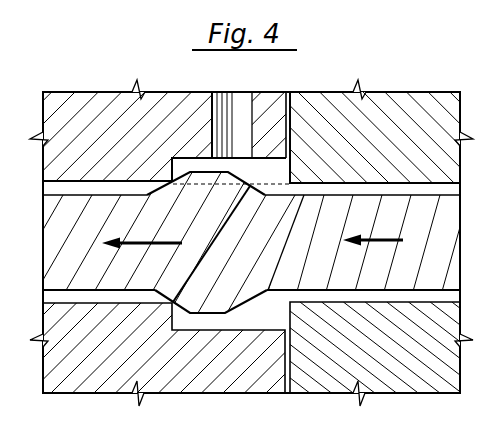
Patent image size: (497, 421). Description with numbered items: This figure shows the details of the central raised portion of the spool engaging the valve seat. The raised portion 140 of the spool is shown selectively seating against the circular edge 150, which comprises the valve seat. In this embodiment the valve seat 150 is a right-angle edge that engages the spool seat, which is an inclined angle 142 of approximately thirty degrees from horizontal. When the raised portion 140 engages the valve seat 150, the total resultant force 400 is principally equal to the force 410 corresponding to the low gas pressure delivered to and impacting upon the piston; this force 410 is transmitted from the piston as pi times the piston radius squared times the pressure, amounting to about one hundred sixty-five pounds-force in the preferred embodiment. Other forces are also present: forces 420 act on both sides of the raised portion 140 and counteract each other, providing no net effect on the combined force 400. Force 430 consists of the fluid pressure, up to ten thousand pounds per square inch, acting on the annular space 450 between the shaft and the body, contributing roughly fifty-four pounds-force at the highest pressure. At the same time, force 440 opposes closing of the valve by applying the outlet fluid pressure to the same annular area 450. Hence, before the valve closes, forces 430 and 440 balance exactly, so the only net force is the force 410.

The raised portion 140 is at (276, 252).
The inclined angle 142 is at (173, 186).
The circular edge 150 is at (166, 175).
The total resultant force 400 is at (178, 246).
The force 410 is at (390, 243).
The forces 420 is at (258, 177).
The force 430 is at (261, 189).
The force 440 is at (163, 190).
The annular space 450 is at (67, 160).